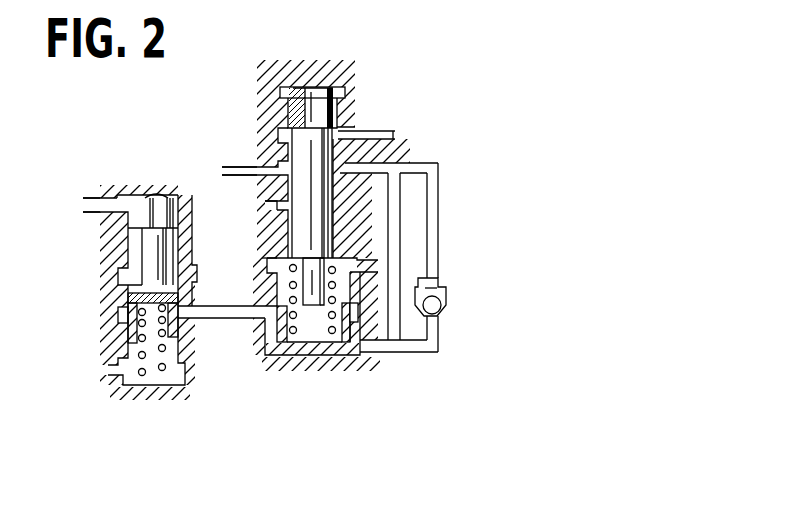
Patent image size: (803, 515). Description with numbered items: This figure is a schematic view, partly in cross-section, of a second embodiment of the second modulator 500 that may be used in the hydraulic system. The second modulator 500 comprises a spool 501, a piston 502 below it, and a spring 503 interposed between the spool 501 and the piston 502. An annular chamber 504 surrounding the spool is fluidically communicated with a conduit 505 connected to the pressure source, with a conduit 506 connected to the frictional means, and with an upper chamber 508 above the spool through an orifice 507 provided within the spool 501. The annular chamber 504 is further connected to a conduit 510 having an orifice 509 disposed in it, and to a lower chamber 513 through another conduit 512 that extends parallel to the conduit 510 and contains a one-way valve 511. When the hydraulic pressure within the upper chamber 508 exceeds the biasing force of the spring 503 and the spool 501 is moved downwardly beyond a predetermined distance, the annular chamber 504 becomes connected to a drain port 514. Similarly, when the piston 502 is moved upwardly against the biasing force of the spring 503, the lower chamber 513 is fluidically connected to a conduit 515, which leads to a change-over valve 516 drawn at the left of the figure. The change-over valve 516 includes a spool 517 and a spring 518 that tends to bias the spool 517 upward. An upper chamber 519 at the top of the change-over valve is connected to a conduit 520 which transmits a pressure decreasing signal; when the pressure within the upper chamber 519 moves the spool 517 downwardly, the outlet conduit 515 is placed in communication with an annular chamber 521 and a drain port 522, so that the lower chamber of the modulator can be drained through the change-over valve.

The second modulator 500 is at (398, 152).
The spool 501 is at (315, 90).
The piston 502 is at (298, 355).
The spring 503 is at (332, 342).
The annular chamber 504 is at (340, 120).
The conduit 505 is at (378, 132).
The conduit 506 is at (232, 166).
The orifice 507 is at (292, 88).
The upper chamber 508 is at (340, 95).
The orifice 509 is at (393, 295).
The conduit 510 is at (392, 205).
The one-way valve 511 is at (441, 304).
The conduit 512 is at (428, 226).
The lower chamber 513 is at (360, 352).
The drain port 514 is at (277, 208).
The conduit 515 is at (232, 318).
The change-over valve 516 is at (118, 302).
The spool 517 is at (140, 220).
The spring 518 is at (162, 372).
The upper chamber 519 is at (138, 195).
The conduit 520 is at (97, 198).
The annular chamber 521 is at (137, 250).
The drain port 522 is at (268, 257).